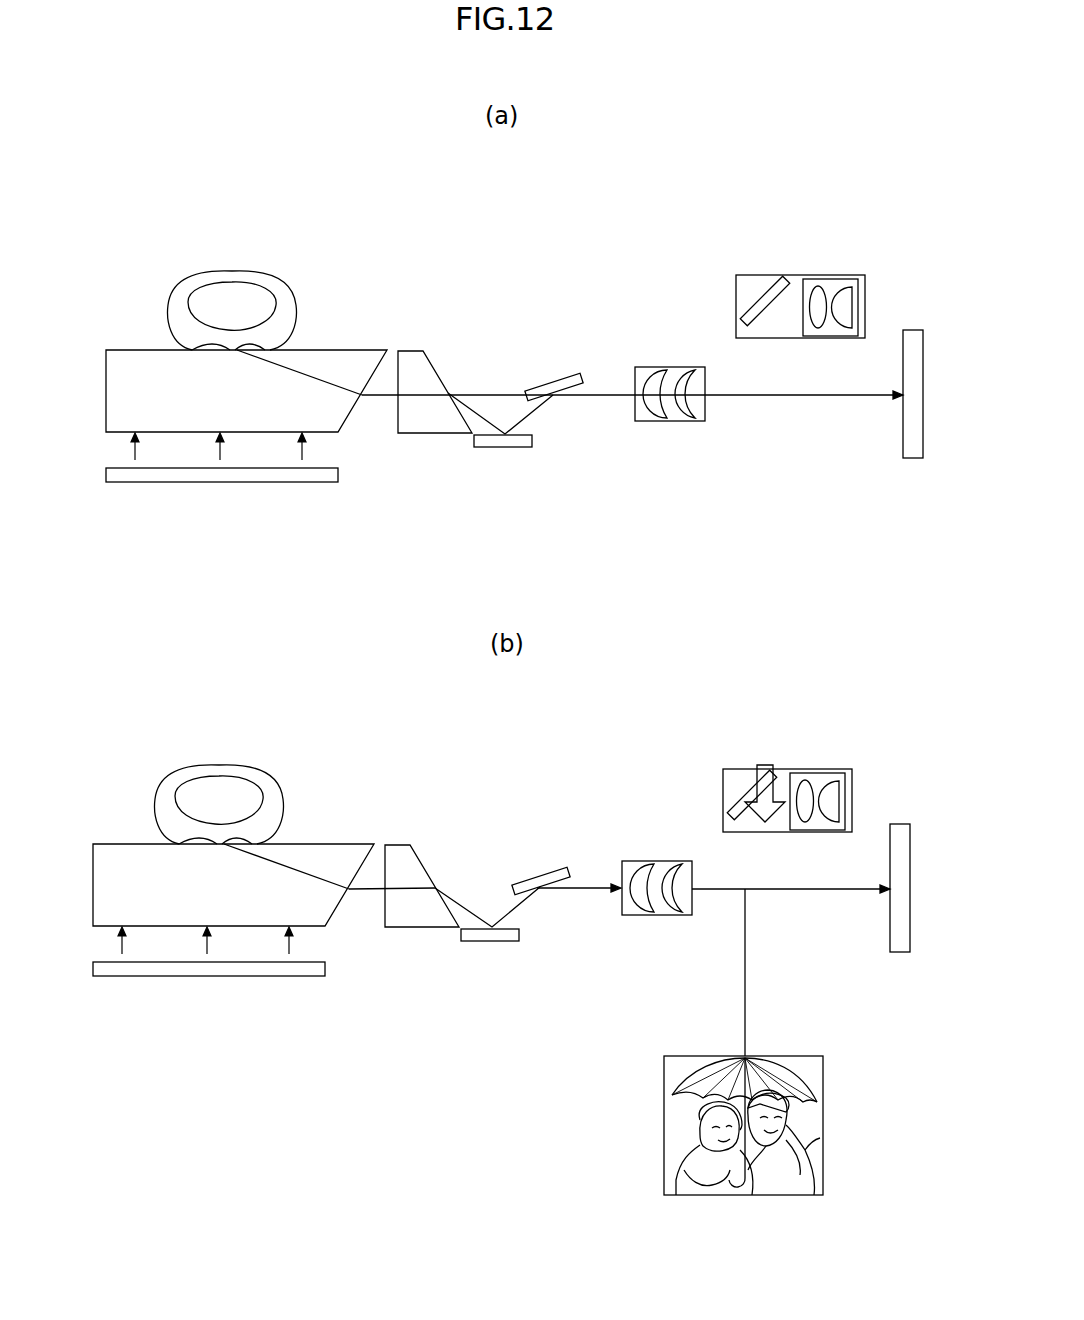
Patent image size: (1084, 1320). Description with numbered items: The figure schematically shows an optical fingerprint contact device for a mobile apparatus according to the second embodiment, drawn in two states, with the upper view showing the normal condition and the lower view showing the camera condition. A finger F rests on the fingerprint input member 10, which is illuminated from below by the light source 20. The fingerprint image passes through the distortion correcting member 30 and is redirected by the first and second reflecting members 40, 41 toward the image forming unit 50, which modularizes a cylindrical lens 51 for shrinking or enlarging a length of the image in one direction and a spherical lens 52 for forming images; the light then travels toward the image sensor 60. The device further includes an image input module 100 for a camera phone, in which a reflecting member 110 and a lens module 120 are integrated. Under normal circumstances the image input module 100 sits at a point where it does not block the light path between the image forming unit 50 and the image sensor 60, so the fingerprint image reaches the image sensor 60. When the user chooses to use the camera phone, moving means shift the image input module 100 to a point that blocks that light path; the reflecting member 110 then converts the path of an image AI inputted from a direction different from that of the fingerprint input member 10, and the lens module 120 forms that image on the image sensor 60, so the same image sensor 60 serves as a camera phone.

The fingerprint input member 10 is at (105, 390).
The light source 20 is at (225, 481).
The distortion correcting member 30 is at (410, 434).
The first reflecting member 40 is at (497, 448).
The second reflecting member 41 is at (552, 381).
The image forming unit 50 is at (658, 366).
The cylindrical lens 51 is at (653, 407).
The spherical lens 52 is at (685, 403).
The image sensor 60 is at (912, 328).
The image input module 100 is at (779, 266).
The reflecting member 110 is at (768, 312).
The lens module 120 is at (856, 307).
The finger F is at (231, 272).
The image AI is at (663, 1127).